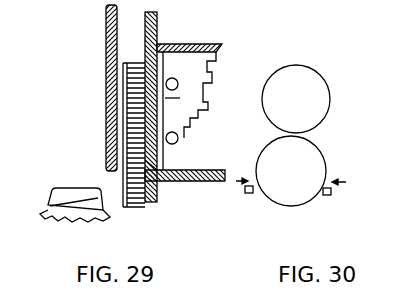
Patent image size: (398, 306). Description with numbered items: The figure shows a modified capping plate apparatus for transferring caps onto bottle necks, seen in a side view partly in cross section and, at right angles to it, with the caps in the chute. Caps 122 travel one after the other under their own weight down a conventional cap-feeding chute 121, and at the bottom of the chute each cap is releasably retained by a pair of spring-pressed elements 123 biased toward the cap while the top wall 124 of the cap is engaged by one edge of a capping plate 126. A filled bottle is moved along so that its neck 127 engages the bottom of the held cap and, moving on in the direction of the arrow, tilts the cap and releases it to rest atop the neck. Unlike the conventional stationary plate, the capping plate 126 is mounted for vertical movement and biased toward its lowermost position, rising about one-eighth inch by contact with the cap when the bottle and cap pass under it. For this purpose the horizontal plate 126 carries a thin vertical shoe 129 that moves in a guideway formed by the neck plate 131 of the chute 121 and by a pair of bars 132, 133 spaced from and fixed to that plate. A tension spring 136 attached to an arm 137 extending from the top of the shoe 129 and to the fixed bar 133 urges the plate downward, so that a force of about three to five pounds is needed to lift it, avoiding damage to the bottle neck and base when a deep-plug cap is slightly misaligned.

In FIG. 29, the cap-feeding chute 121 is at (128, 46).
In FIG. 29, the cap 122 is at (110, 100).
In FIG. 30, the cap 122 is at (318, 100).
In FIG. 29, the spring-pressed elements 123 is at (148, 188).
In FIG. 30, the spring-pressed elements 123 is at (249, 194).
In FIG. 29, the top wall of the cap 124 is at (150, 182).
In FIG. 29, the capping plate 126 is at (208, 170).
In FIG. 29, the bottle neck 127 is at (52, 192).
In FIG. 29, the vertical shoe 129 is at (184, 155).
In FIG. 29, the neck plate 131 is at (158, 42).
In FIG. 29, the bar 132 is at (183, 73).
In FIG. 29, the fixed bar 133 is at (178, 137).
In FIG. 29, the tension spring 136 is at (209, 87).
In FIG. 29, the arm 137 is at (206, 45).